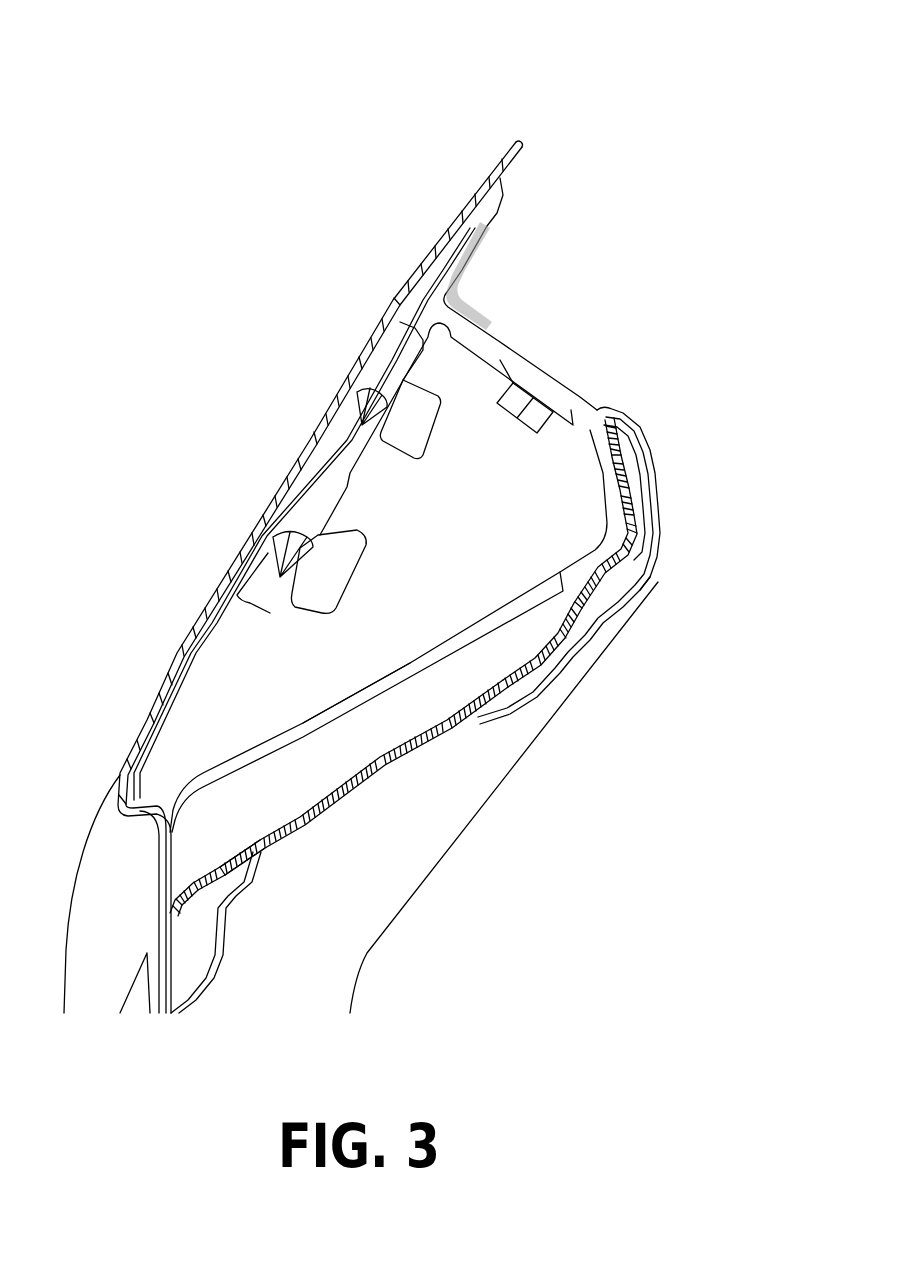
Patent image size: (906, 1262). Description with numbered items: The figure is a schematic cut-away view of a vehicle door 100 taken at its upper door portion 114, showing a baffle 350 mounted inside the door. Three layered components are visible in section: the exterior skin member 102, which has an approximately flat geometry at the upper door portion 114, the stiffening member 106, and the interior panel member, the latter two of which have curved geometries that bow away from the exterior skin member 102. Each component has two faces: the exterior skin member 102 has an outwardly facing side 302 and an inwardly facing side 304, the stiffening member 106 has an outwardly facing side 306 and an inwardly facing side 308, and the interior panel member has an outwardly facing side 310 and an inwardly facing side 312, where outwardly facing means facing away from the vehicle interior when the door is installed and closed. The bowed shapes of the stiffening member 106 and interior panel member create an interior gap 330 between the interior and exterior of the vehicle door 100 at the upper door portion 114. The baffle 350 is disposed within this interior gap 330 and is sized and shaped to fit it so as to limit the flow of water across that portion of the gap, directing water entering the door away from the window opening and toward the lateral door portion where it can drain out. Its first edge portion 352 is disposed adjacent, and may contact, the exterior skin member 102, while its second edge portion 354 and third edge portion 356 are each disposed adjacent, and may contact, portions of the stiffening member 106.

The vehicle door 100 is at (528, 104).
The exterior skin member 102 is at (293, 473).
The stiffening member 106 is at (627, 550).
The upper door portion 114 is at (583, 678).
The outwardly facing side 302 is at (205, 612).
The inwardly facing side 304 is at (198, 647).
The outwardly facing side 306 is at (231, 860).
The inwardly facing side 308 is at (224, 878).
The outwardly facing side 310 is at (655, 603).
The inwardly facing side 312 is at (620, 592).
The interior gap 330 is at (392, 712).
The baffle 350 is at (472, 541).
The first edge portion 352 is at (180, 660).
The second edge portion 354 is at (427, 657).
The third edge portion 356 is at (490, 358).